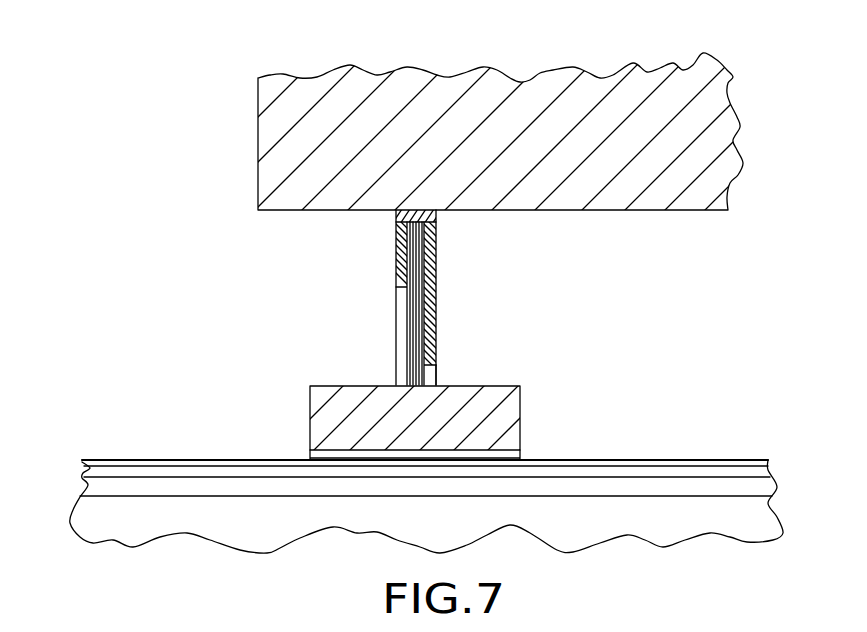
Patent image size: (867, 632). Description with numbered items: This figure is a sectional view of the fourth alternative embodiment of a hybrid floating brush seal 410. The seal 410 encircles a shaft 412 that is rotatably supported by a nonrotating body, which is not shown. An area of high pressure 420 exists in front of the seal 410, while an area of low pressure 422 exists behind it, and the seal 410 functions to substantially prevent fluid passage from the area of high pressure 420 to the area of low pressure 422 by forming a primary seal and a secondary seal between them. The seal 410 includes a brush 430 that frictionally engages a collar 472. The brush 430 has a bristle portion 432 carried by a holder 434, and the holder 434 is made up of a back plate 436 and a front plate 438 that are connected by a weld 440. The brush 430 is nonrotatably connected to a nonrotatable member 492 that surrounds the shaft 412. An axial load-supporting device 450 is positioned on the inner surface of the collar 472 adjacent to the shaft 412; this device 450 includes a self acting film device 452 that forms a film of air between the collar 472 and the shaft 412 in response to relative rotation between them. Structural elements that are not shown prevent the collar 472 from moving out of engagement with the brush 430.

The hybrid floating brush seal 410 is at (168, 205).
The shaft 412 is at (90, 482).
The area of high pressure 420 is at (153, 145).
The area of low pressure 422 is at (738, 340).
The brush 430 is at (442, 295).
The bristle portion 432 is at (403, 333).
The holder 434 is at (458, 343).
The back plate 436 is at (437, 307).
The front plate 438 is at (396, 271).
The weld 440 is at (437, 213).
The axial load-supporting device 450 is at (393, 415).
The self acting film device 452 is at (520, 455).
The collar 472 is at (520, 407).
The nonrotatable member 492 is at (452, 83).